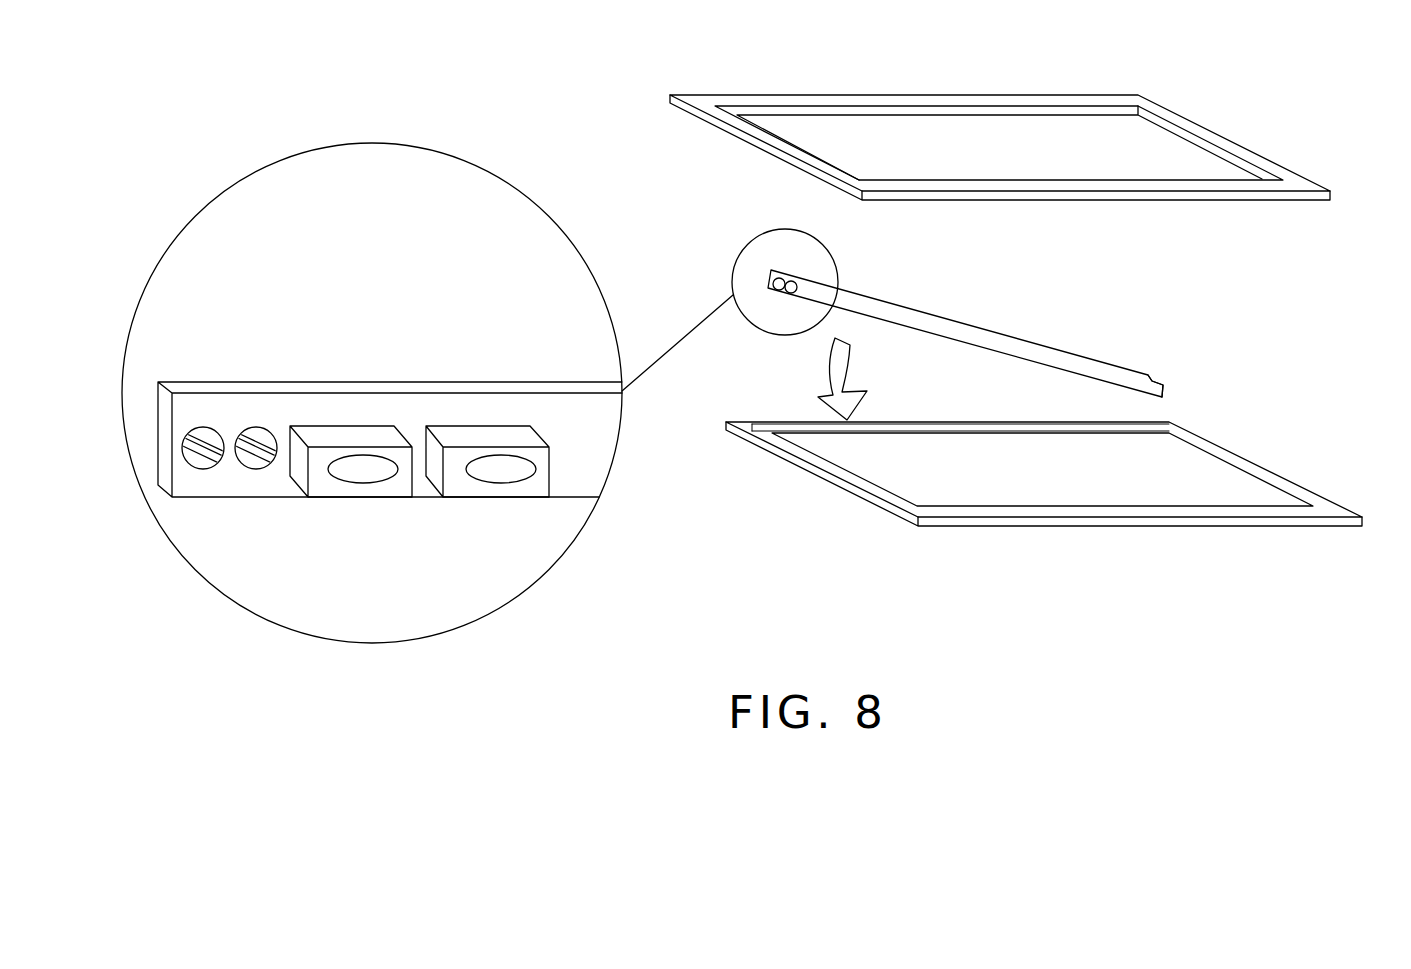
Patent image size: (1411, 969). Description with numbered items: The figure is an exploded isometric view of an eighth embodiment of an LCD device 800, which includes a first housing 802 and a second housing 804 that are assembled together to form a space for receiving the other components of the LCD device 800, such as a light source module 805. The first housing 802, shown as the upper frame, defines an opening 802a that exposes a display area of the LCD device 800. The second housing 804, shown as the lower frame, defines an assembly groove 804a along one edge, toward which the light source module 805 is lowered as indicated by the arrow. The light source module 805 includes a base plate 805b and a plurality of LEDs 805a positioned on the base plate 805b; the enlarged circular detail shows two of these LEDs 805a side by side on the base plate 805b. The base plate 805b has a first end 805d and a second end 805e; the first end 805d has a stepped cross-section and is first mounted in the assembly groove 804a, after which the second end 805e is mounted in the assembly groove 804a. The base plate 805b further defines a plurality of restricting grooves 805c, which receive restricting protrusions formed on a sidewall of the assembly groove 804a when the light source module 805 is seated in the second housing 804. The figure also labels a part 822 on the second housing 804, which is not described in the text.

The LCD device 800 is at (1293, 101).
The first housing 802 is at (832, 95).
The opening 802a is at (1068, 128).
The second housing 804 is at (942, 526).
The assembly groove 804a is at (770, 424).
The light source module 805 is at (1045, 350).
The LEDs 805a is at (517, 455).
The base plate 805b is at (438, 406).
The restricting grooves 805c is at (262, 452).
The first end 805d is at (1133, 388).
The second end 805e is at (812, 288).
The side wall 822 is at (1232, 462).